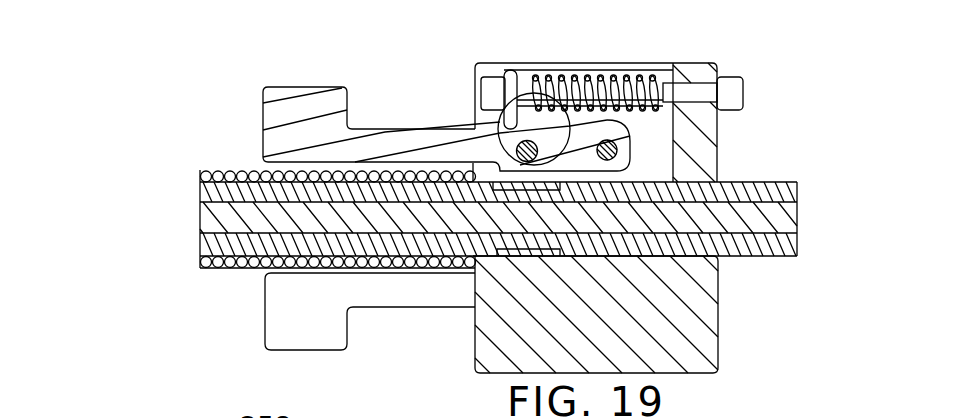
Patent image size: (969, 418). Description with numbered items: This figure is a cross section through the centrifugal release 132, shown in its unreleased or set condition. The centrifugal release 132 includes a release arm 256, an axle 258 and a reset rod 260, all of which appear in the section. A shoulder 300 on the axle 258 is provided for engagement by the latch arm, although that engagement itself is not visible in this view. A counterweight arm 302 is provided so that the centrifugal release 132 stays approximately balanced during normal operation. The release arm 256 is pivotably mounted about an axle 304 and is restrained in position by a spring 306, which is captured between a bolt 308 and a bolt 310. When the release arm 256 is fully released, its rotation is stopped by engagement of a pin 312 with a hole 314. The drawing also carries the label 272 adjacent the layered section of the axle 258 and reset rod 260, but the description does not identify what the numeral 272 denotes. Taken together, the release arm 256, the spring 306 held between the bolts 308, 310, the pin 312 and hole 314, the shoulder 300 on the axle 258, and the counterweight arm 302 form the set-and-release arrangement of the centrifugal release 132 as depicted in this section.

The centrifugal release 132 is at (215, 102).
The release arm 256 is at (312, 100).
The axle 258 is at (200, 192).
The reset rod 260 is at (200, 220).
The coil row 272 is at (200, 173).
The shoulder 300 is at (543, 257).
The counterweight arm 302 is at (263, 315).
The axle 304 is at (632, 150).
The spring 306 is at (613, 72).
The bolt 308 is at (480, 100).
The bolt 310 is at (737, 77).
The pin 312 is at (527, 143).
The hole 314 is at (510, 110).